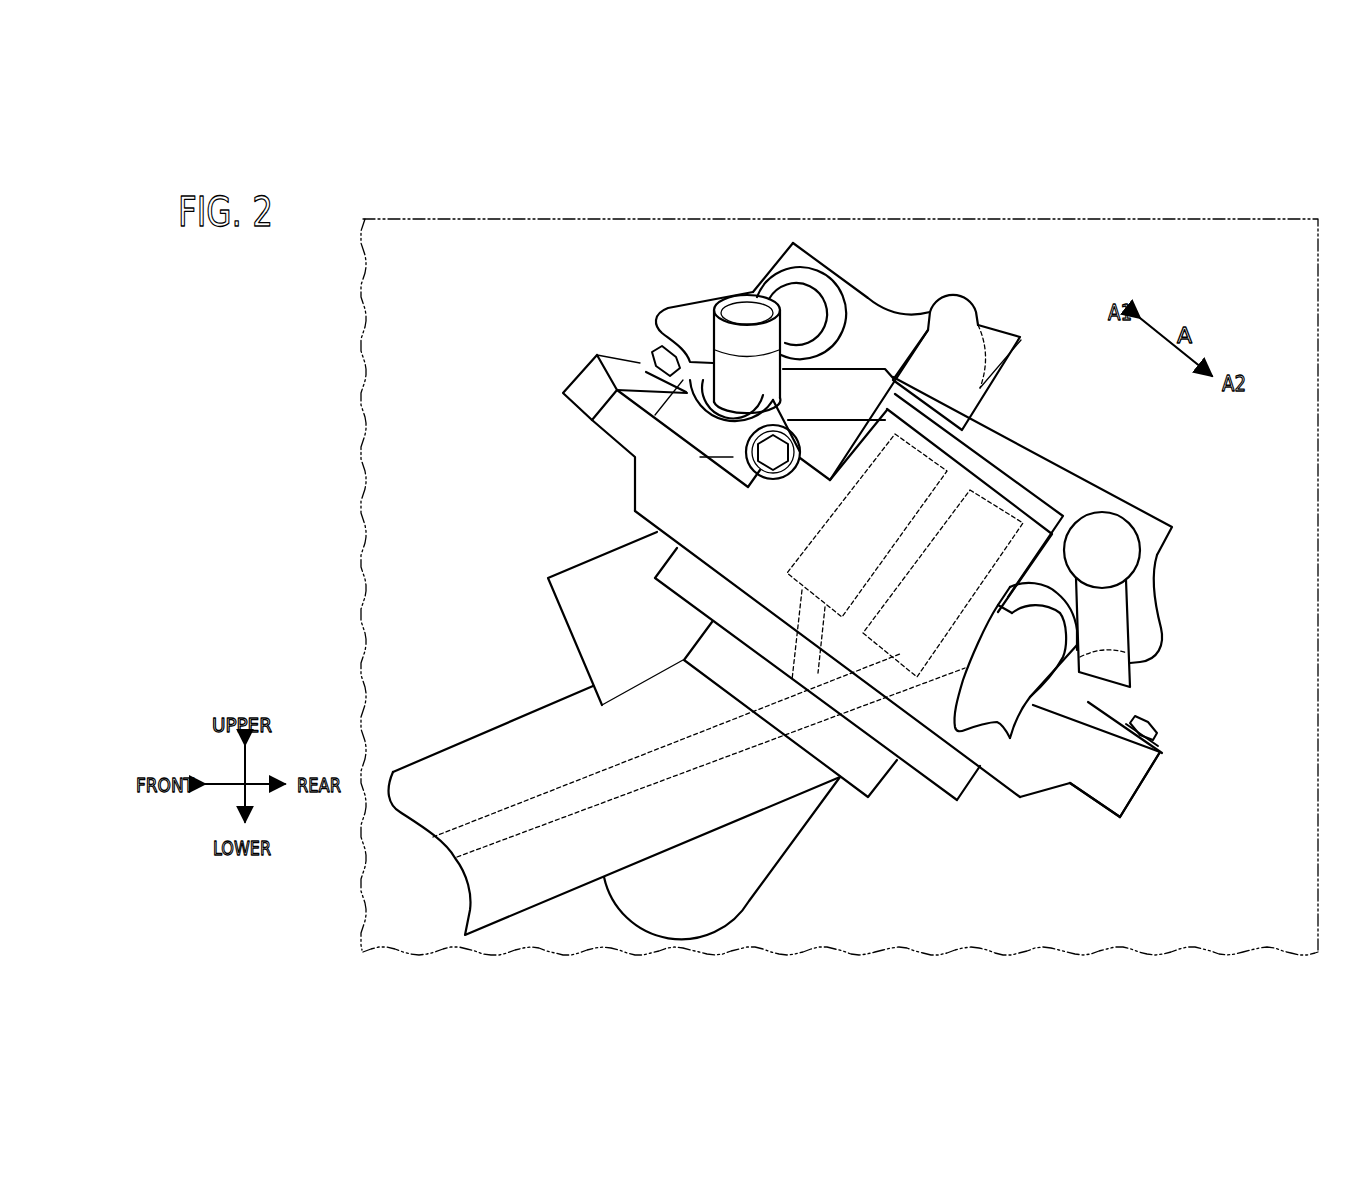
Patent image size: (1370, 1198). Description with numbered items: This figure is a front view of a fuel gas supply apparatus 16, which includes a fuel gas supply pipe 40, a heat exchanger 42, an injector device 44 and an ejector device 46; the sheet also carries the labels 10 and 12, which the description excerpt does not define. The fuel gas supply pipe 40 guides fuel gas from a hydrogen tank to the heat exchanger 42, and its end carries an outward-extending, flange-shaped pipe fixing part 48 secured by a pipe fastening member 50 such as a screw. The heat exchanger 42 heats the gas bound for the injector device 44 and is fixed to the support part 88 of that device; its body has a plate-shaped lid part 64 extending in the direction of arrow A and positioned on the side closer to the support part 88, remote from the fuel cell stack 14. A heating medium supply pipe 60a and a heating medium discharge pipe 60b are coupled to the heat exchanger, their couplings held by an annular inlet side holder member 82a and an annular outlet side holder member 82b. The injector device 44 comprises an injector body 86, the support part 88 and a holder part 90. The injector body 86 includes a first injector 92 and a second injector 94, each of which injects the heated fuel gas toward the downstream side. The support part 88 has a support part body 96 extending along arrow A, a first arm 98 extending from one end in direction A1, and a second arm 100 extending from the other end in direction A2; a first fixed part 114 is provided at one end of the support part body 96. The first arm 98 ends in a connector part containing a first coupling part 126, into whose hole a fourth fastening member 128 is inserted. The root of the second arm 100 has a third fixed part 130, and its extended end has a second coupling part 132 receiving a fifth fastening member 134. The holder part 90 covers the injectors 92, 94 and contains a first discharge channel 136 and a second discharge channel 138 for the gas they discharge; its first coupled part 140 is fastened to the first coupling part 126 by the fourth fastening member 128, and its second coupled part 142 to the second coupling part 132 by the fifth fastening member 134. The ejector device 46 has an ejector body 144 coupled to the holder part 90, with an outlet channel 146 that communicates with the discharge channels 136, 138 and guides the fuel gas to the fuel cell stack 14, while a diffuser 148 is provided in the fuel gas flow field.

The bicycle 10 is at (299, 262).
The bicycle frame 12 is at (333, 262).
The fuel cell stack 14 is at (1322, 217).
The fuel gas supply apparatus 16 is at (779, 362).
The fuel gas supply pipe 40 is at (724, 336).
The heat exchanger 42 is at (775, 259).
The injector device 44 is at (1109, 693).
The ejector device 46 is at (538, 540).
The pipe fixing part 48 is at (742, 450).
The pipe fastening member 50 is at (778, 458).
The heating medium supply pipe 60a is at (688, 316).
The heating medium discharge pipe 60b is at (988, 710).
The lid part 64 is at (988, 527).
The inlet side holder member 82a is at (805, 283).
The outlet side holder member 82b is at (1065, 660).
The injector body 86 is at (890, 433).
The support part 88 is at (1167, 754).
The holder part 90 is at (1128, 808).
The first injector 92 is at (947, 470).
The second injector 94 is at (1025, 522).
The support part body 96 is at (987, 442).
The first arm 98 is at (843, 387).
The second arm 100 is at (1112, 640).
The first fixed part 114 is at (956, 312).
The first coupling part 126 is at (643, 397).
The fourth fastening member 128 is at (650, 353).
The third fixed part 130 is at (1143, 627).
The second coupling part 132 is at (1143, 760).
The fifth fastening member 134 is at (1145, 718).
The first discharge channel 136 is at (800, 610).
The second discharge channel 138 is at (887, 663).
The first coupled part 140 is at (608, 428).
The second coupled part 142 is at (1105, 795).
The ejector body 144 is at (857, 765).
The outlet channel 146 is at (732, 722).
The diffuser 148 is at (672, 738).